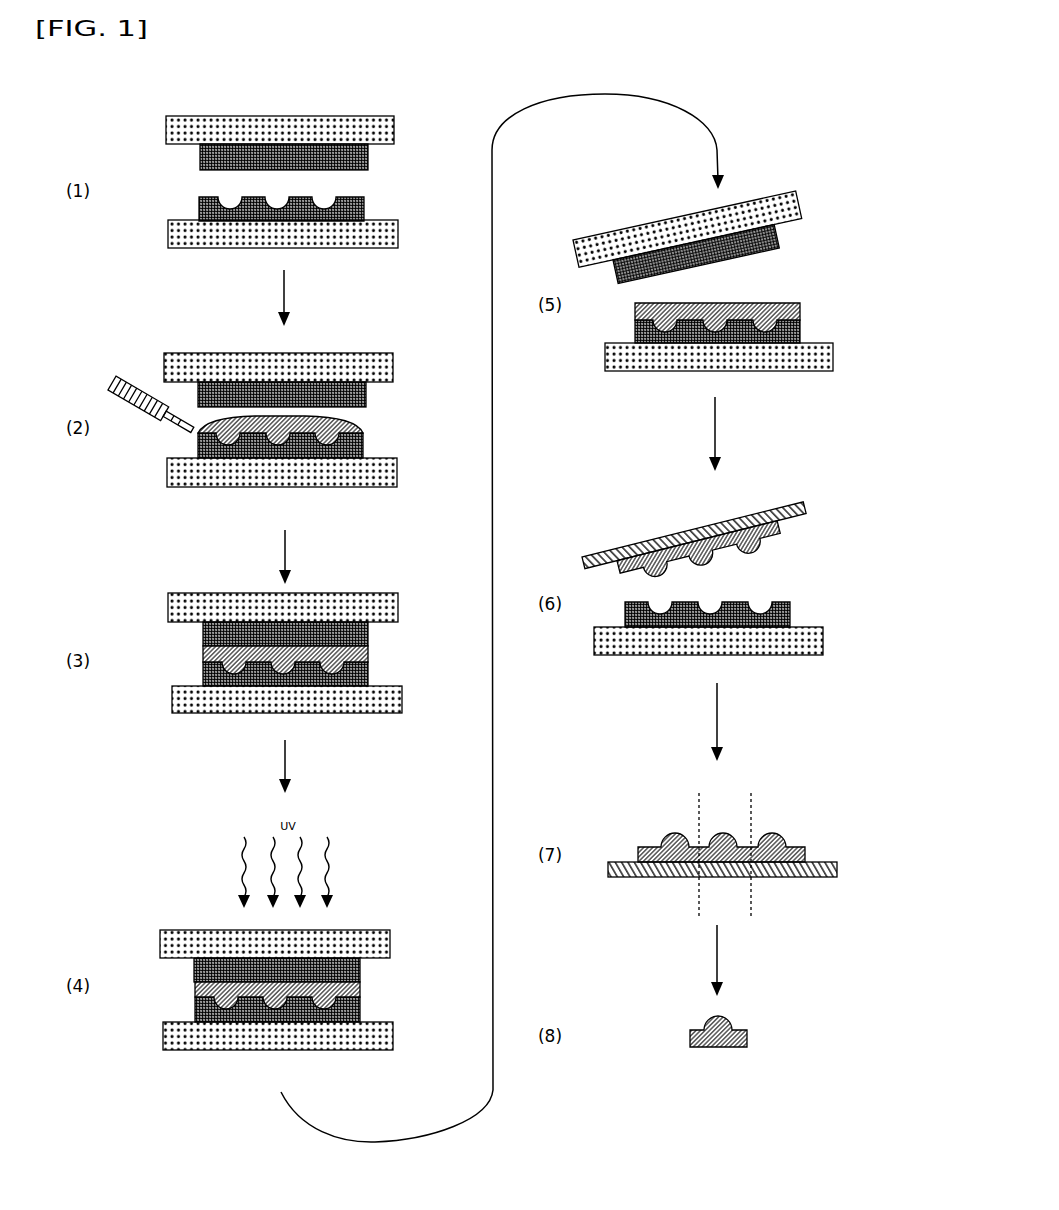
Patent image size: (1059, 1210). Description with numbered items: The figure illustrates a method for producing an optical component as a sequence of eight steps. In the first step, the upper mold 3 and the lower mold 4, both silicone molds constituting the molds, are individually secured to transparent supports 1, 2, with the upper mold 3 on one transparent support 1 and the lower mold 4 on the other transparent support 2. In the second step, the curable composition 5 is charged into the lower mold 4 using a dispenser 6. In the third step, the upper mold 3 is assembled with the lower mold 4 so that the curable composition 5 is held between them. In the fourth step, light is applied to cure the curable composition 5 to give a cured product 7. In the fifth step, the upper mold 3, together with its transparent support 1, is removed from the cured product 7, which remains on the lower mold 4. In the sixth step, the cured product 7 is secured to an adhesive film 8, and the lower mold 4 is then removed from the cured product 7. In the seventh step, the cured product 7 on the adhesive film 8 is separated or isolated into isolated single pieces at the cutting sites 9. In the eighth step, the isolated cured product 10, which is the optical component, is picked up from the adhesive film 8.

The transparent support 1 is at (393, 120).
The transparent support 2 is at (398, 240).
The upper mold 3 is at (369, 160).
The lower mold 4 is at (365, 208).
The curable composition 5 is at (362, 420).
The dispenser 6 is at (118, 366).
The cured product of curable composition 7 is at (791, 305).
The adhesive film 8 is at (806, 503).
The cutting site 9 is at (703, 792).
The isolated cured product 10 is at (748, 1036).